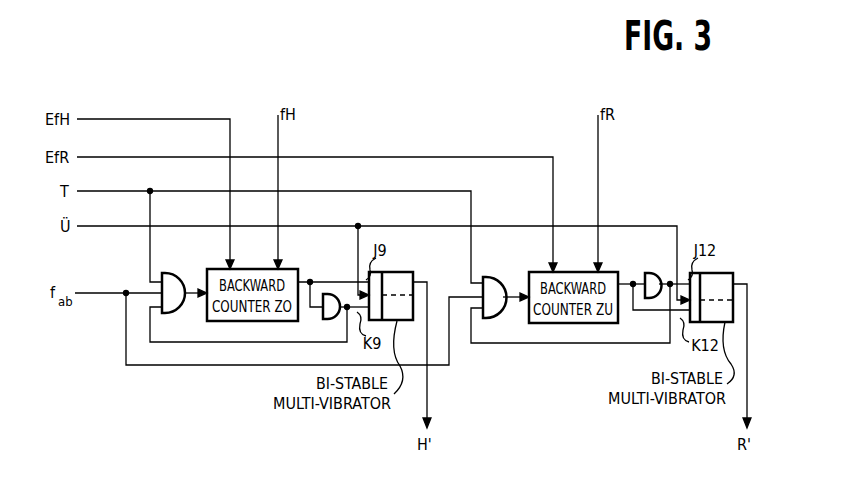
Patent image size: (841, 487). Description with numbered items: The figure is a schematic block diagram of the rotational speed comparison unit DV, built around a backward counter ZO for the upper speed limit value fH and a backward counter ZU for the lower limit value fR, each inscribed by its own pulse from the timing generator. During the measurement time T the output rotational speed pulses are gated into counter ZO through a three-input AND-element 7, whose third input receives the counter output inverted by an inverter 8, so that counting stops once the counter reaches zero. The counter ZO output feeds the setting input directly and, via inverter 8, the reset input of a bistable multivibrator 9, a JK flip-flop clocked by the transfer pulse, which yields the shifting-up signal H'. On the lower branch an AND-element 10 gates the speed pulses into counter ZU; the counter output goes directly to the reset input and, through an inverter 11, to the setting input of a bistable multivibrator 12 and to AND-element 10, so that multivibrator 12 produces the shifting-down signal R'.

The AND-element 7 is at (178, 272).
The inverter 8 is at (330, 290).
The bistable multivibrator 9 is at (410, 271).
The AND-element 10 is at (492, 275).
The inverter 11 is at (651, 270).
The bistable multivibrator 12 is at (728, 272).